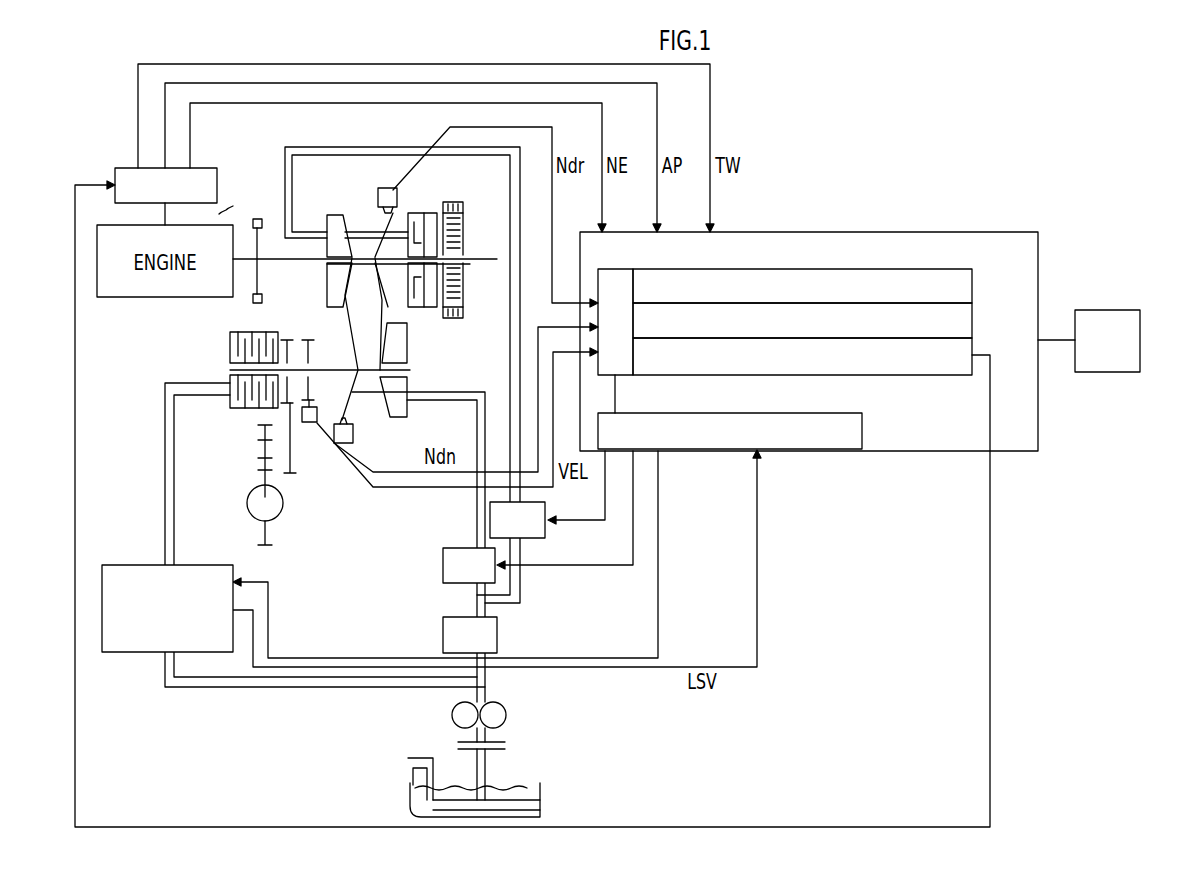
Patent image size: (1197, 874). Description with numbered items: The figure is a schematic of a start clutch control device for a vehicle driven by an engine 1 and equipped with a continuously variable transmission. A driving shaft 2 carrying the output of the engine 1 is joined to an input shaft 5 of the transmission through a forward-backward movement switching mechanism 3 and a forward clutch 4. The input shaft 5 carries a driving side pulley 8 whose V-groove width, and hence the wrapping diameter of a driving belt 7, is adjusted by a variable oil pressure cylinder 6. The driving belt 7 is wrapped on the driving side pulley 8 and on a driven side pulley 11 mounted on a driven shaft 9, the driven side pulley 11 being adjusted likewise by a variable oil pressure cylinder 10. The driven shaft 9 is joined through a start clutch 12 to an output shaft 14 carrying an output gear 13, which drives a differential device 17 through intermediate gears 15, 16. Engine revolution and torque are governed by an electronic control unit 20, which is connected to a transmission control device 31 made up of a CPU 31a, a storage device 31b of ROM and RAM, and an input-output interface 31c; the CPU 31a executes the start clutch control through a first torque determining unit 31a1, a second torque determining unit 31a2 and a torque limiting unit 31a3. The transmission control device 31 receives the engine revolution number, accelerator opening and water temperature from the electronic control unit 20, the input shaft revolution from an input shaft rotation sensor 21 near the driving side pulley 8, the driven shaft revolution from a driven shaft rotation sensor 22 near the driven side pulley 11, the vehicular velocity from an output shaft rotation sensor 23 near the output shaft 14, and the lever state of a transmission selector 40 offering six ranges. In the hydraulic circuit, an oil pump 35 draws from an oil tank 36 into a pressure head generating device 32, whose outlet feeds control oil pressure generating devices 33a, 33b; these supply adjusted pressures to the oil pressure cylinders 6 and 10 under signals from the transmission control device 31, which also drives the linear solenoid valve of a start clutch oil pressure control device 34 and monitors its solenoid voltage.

The engine 1 is at (229, 199).
The driving shaft 2 is at (262, 258).
The forward-backward movement switching mechanism 3 is at (466, 230).
The forward clutch 4 is at (432, 214).
The input shaft 5 is at (385, 270).
The variable oil pressure cylinder 6 is at (332, 215).
The driving belt 7 is at (365, 230).
The driving side pulley 8 is at (349, 197).
The driven shaft 9 is at (410, 372).
The variable oil pressure cylinder 10 is at (397, 339).
The driven side pulley 11 is at (415, 413).
The start clutch 12 is at (230, 347).
The output gear 13 is at (308, 338).
The output shaft 14 is at (287, 338).
The intermediate gear 15 is at (288, 474).
The intermediate gear 16 is at (258, 428).
The differential device 17 is at (247, 503).
The electronic control unit 20 is at (212, 168).
The input shaft rotation sensor 21 is at (398, 198).
The driven shaft rotation sensor 22 is at (353, 440).
The output shaft rotation sensor 23 is at (310, 423).
The transmission control device 31 is at (1038, 253).
The CPU 31a is at (614, 265).
The first torque determining unit 31a1 is at (972, 281).
The second torque determining unit 31a2 is at (972, 314).
The torque limiting unit 31a3 is at (972, 346).
The storage device 31b is at (818, 410).
The input-output interface 31c is at (1038, 420).
The pressure head generating device 32 is at (497, 634).
The control oil pressure generating device 33a is at (545, 507).
The control oil pressure generating device 33b is at (443, 553).
The start clutch oil pressure control device 34 is at (121, 565).
The oil pump 35 is at (508, 706).
The oil tank 36 is at (540, 800).
The transmission selector 40 is at (1140, 325).